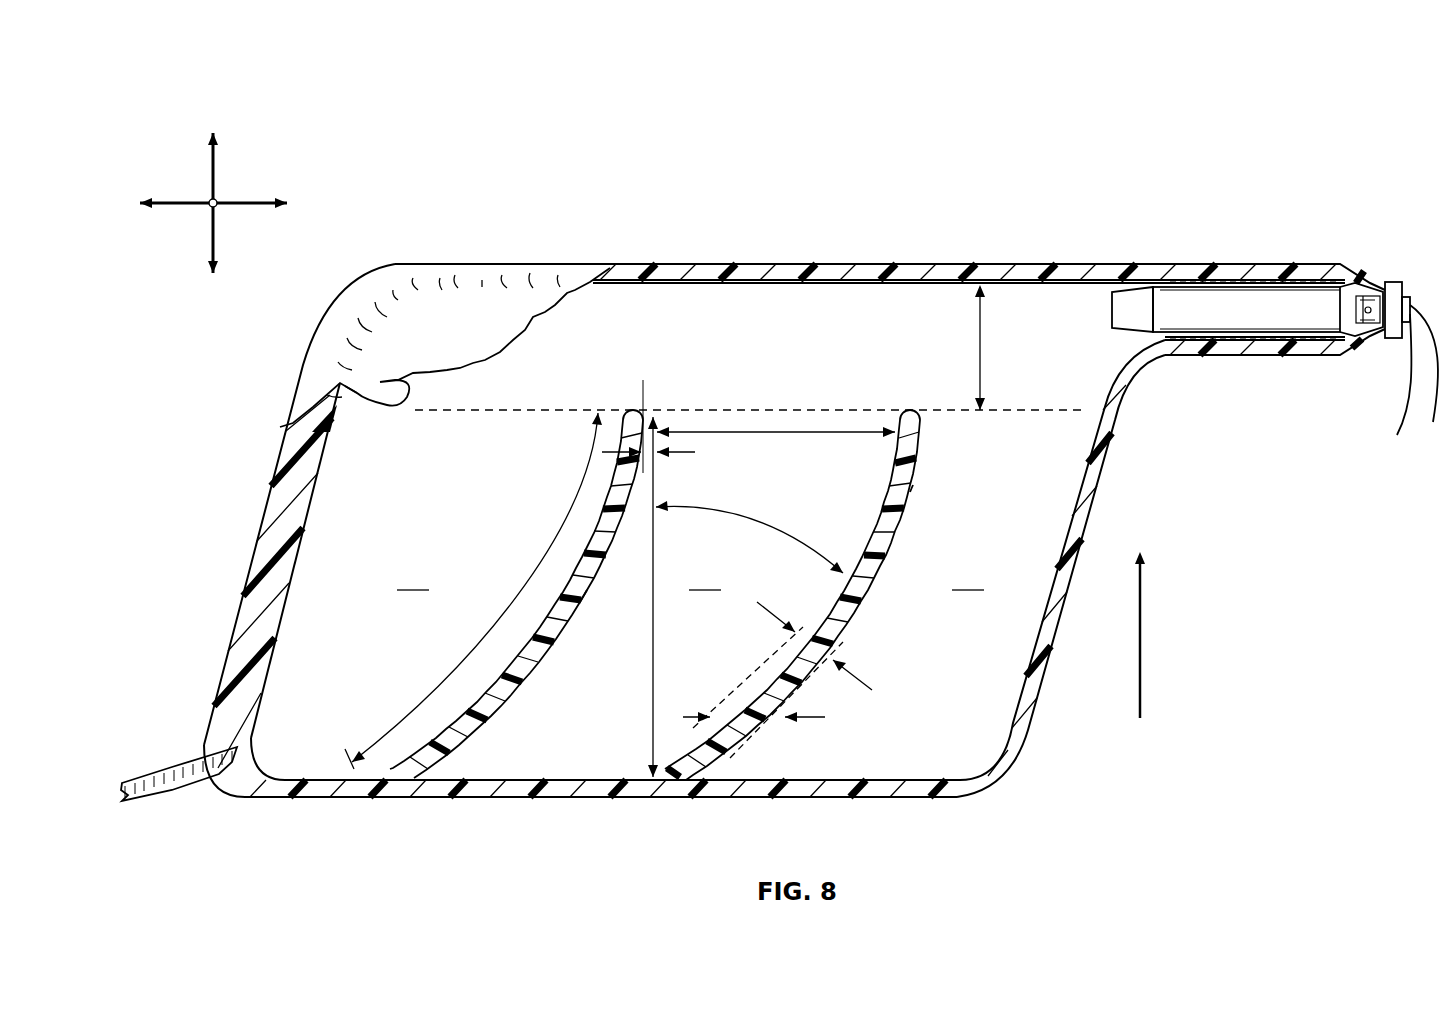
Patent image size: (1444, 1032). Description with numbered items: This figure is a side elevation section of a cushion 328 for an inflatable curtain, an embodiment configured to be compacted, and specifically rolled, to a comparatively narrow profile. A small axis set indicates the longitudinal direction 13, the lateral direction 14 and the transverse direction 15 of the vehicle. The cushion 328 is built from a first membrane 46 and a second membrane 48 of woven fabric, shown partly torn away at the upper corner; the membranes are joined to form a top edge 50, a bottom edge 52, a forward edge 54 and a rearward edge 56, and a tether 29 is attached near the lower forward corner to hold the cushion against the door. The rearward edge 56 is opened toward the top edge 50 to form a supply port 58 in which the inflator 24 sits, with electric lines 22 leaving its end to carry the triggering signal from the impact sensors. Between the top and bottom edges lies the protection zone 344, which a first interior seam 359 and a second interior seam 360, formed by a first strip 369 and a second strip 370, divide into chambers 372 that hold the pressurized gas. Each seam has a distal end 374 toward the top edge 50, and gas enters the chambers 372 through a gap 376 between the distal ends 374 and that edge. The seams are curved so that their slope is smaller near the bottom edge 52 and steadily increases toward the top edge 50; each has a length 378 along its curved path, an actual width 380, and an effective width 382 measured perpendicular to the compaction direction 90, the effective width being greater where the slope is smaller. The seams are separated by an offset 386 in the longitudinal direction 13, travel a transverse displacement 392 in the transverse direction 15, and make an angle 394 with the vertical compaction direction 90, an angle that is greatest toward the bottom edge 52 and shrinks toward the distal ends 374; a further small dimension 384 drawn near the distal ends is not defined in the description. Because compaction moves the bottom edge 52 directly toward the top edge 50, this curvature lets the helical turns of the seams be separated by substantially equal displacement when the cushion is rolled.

The longitudinal direction 13 is at (240, 207).
The lateral direction 14 is at (208, 202).
The transverse direction 15 is at (215, 165).
The electric lines 22 is at (1433, 300).
The inflator 24 is at (1297, 300).
The tether 29 is at (158, 778).
The first membrane 46 is at (583, 308).
The second membrane 48 is at (345, 386).
The top edge 50 is at (663, 268).
The bottom edge 52 is at (517, 797).
The forward edge 54 is at (273, 515).
The rearward edge 56 is at (1097, 485).
The supply port 58 is at (1287, 355).
The compaction direction 90 is at (1140, 648).
The cushion 328 is at (1035, 220).
The protection zone 344 is at (772, 317).
The first interior seam 359 is at (517, 700).
The second interior seam 360 is at (870, 597).
The first strip 369 is at (591, 592).
The second strip 370 is at (913, 485).
The chambers 372 is at (690, 578).
The distal end 374 is at (628, 415).
The gap 376 is at (982, 331).
The length 378 is at (540, 552).
The actual width 380 is at (858, 688).
The effective width 382 is at (812, 718).
The end spacing dimension 384 is at (683, 452).
The offset 386 is at (768, 432).
The transverse displacement 392 is at (656, 650).
The angle 394 is at (770, 525).